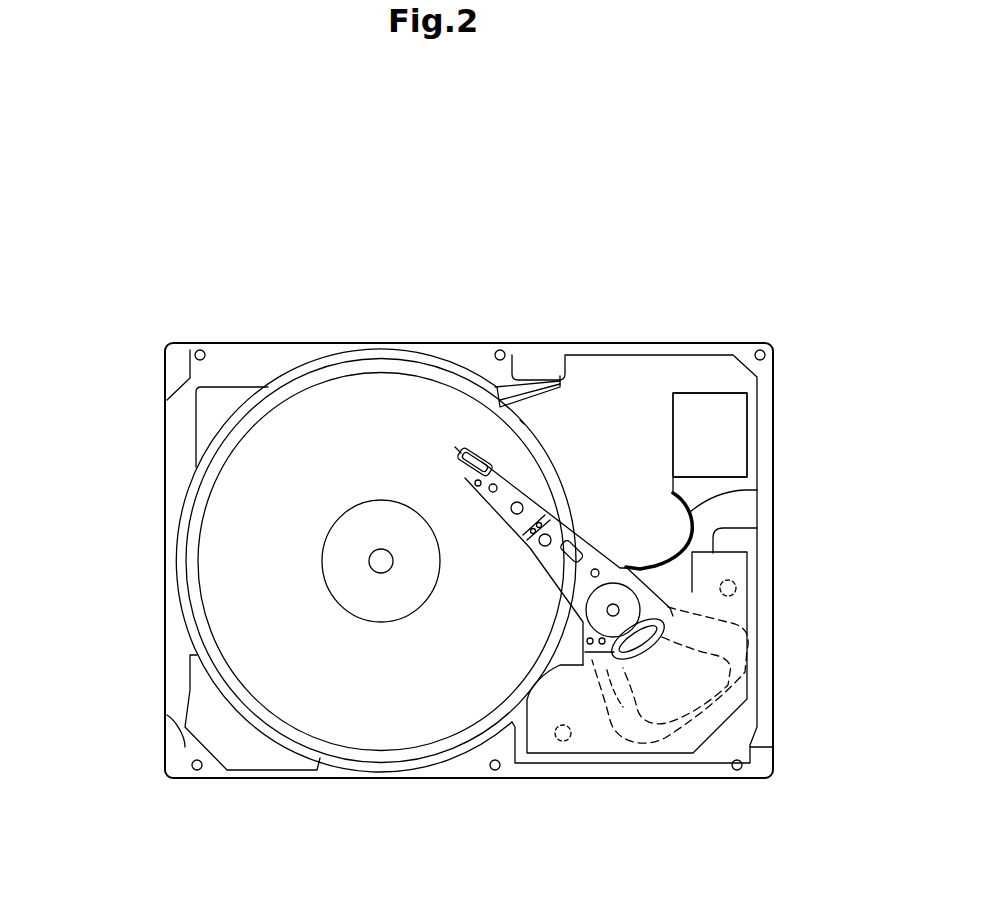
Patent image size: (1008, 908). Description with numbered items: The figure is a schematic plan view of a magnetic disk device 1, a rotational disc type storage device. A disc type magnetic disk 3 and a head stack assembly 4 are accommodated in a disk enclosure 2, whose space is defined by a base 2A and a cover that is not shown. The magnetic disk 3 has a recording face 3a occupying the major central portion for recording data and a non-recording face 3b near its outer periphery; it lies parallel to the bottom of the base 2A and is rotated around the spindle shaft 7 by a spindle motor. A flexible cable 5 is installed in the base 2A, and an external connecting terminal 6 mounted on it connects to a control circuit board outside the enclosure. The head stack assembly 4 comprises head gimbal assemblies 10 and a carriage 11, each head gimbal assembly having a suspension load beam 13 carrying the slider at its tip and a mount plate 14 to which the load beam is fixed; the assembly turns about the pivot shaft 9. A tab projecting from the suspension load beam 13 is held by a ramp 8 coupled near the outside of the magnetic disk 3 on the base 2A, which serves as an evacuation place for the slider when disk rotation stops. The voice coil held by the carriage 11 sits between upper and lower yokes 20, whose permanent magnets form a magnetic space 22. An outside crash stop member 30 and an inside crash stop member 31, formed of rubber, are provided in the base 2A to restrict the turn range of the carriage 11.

The magnetic disk device 1 is at (424, 330).
The disk enclosure 2 is at (160, 432).
The base 2A is at (643, 396).
The magnetic disk 3 is at (383, 697).
The recording face 3a is at (248, 582).
The non-recording face 3b is at (193, 609).
The head stack assembly 4 is at (611, 545).
The flexible cable 5 is at (713, 507).
The external connecting terminal 6 is at (733, 432).
The spindle shaft 7 is at (380, 560).
The ramp 8 is at (536, 402).
The pivot shaft 9 is at (614, 607).
The head gimbal assembly 10 is at (580, 542).
The carriage 11 is at (722, 632).
The suspension load beam 13 is at (495, 502).
The mount plate 14 is at (568, 578).
The upper and lower yokes 20 is at (680, 745).
The magnetic space 22 is at (752, 670).
The outside crash stop member 30 is at (563, 745).
The inside crash stop member 31 is at (740, 587).